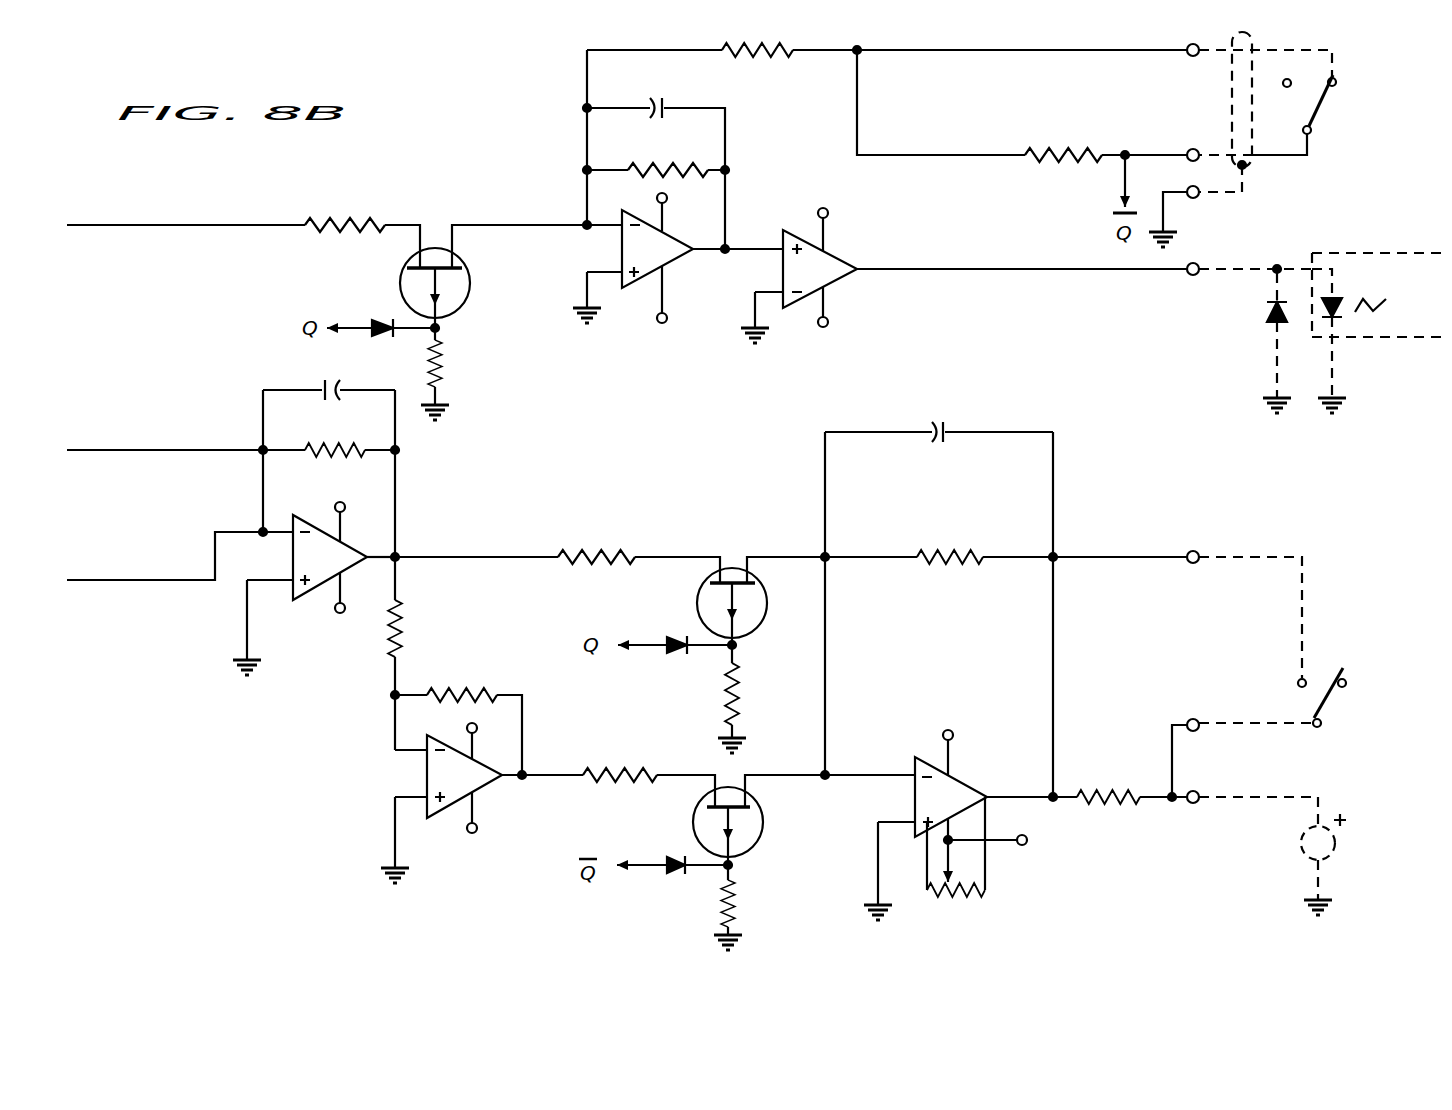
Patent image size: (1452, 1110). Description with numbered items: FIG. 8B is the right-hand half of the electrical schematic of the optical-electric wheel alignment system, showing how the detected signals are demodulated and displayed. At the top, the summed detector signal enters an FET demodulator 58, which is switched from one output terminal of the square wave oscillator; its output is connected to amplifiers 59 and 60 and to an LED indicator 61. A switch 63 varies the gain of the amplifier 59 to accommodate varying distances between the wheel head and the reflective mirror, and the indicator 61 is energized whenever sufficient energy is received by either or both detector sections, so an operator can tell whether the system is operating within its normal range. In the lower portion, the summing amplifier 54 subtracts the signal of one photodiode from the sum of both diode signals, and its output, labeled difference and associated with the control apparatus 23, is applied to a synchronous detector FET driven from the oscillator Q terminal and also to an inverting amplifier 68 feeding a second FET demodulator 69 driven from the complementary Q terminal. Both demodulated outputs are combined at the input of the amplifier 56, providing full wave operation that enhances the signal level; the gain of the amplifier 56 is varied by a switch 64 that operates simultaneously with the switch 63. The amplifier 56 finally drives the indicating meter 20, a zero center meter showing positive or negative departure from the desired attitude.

The indicating meter 20 is at (1335, 845).
The control apparatus 23 is at (632, 518).
The summing amplifier 54 is at (317, 605).
The amplifier 56 is at (917, 753).
The FET demodulator 58 is at (463, 313).
The amplifier 59 is at (673, 262).
The amplifier 60 is at (837, 292).
The LED indicator 61 is at (1358, 320).
The switch 63 is at (1333, 105).
The switch 64 is at (1343, 707).
The inverting amplifier 68 is at (395, 768).
The FET demodulator 69 is at (632, 760).